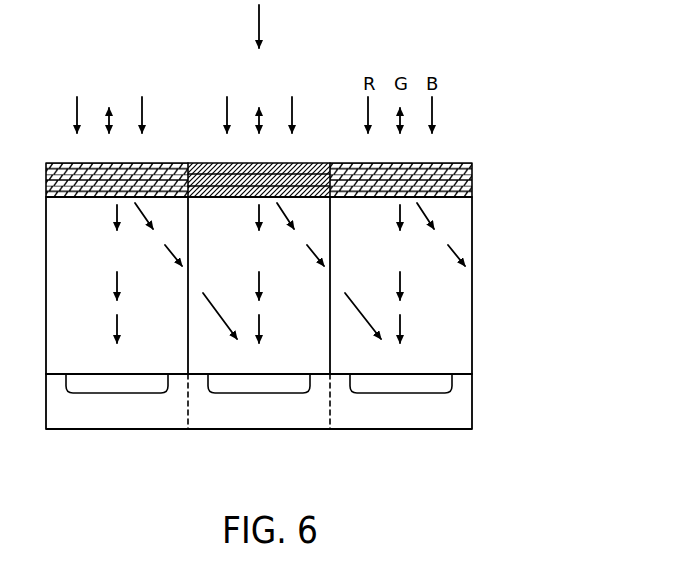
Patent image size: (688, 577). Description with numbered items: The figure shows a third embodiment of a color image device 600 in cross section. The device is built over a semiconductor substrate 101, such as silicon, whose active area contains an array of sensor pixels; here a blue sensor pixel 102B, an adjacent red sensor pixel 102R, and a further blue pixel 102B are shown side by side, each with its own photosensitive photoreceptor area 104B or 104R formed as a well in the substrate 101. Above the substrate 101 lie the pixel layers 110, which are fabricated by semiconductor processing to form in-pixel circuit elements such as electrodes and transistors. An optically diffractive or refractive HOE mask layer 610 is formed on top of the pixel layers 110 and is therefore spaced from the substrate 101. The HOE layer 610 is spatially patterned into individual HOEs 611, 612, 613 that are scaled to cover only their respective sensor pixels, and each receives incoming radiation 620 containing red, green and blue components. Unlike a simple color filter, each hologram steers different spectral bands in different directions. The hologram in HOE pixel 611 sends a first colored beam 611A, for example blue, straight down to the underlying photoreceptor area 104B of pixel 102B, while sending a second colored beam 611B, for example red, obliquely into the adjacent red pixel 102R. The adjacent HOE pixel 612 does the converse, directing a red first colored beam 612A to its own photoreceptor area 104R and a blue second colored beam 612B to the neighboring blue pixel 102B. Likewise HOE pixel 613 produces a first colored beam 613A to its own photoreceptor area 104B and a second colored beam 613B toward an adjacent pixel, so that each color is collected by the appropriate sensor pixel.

The color image device 600 is at (103, 54).
The received radiation 620 is at (260, 22).
The HOE mask layer 610 is at (473, 177).
The HOE pixel 611 is at (166, 163).
The HOE pixel 612 is at (310, 163).
The HOE pixel 613 is at (444, 163).
The first colored beam 611A is at (118, 322).
The second colored beam 611B is at (144, 213).
The first colored beam 612A is at (260, 277).
The second colored beam 612B is at (286, 213).
The first colored beam 613A is at (402, 320).
The second colored beam 613B is at (430, 225).
The pixel layers 110 is at (479, 374).
The substrate 101 is at (475, 402).
The blue sensor pixel 102B is at (70, 432).
The red sensor pixel 102R is at (272, 430).
The photoreceptor area 104B is at (118, 395).
The photoreceptor area 104R is at (238, 395).